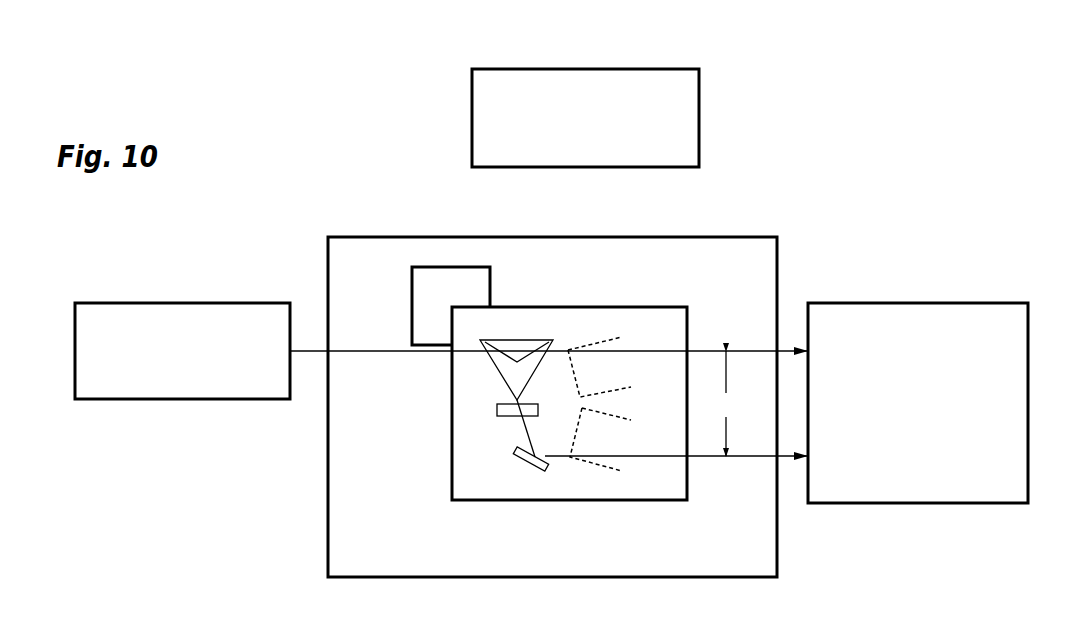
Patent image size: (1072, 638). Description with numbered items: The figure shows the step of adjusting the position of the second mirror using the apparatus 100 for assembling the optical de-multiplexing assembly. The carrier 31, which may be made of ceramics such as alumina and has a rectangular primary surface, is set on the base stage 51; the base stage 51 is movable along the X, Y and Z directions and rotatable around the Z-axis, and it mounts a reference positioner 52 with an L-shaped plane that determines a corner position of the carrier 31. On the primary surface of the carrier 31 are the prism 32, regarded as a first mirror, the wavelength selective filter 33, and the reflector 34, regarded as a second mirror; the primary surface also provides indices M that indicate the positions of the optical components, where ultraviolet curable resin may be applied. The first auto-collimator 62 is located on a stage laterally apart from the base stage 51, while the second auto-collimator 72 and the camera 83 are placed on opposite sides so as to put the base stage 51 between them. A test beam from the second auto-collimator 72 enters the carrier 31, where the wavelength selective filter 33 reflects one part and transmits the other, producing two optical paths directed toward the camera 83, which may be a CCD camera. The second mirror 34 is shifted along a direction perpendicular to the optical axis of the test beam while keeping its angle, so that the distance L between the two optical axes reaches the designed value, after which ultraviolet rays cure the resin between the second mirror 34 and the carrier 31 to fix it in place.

The apparatus 100 is at (285, 125).
The base stage 51 is at (760, 560).
The reference positioner 52 is at (427, 265).
The carrier 31 is at (468, 480).
The prism 32 is at (525, 345).
The wavelength selective filter 33 is at (497, 410).
The reflector 34 is at (527, 463).
The first auto-collimator 62 is at (585, 118).
The second auto-collimator 72 is at (182, 351).
The camera 83 is at (918, 403).
The indices M is at (613, 335).
The distance L is at (727, 403).